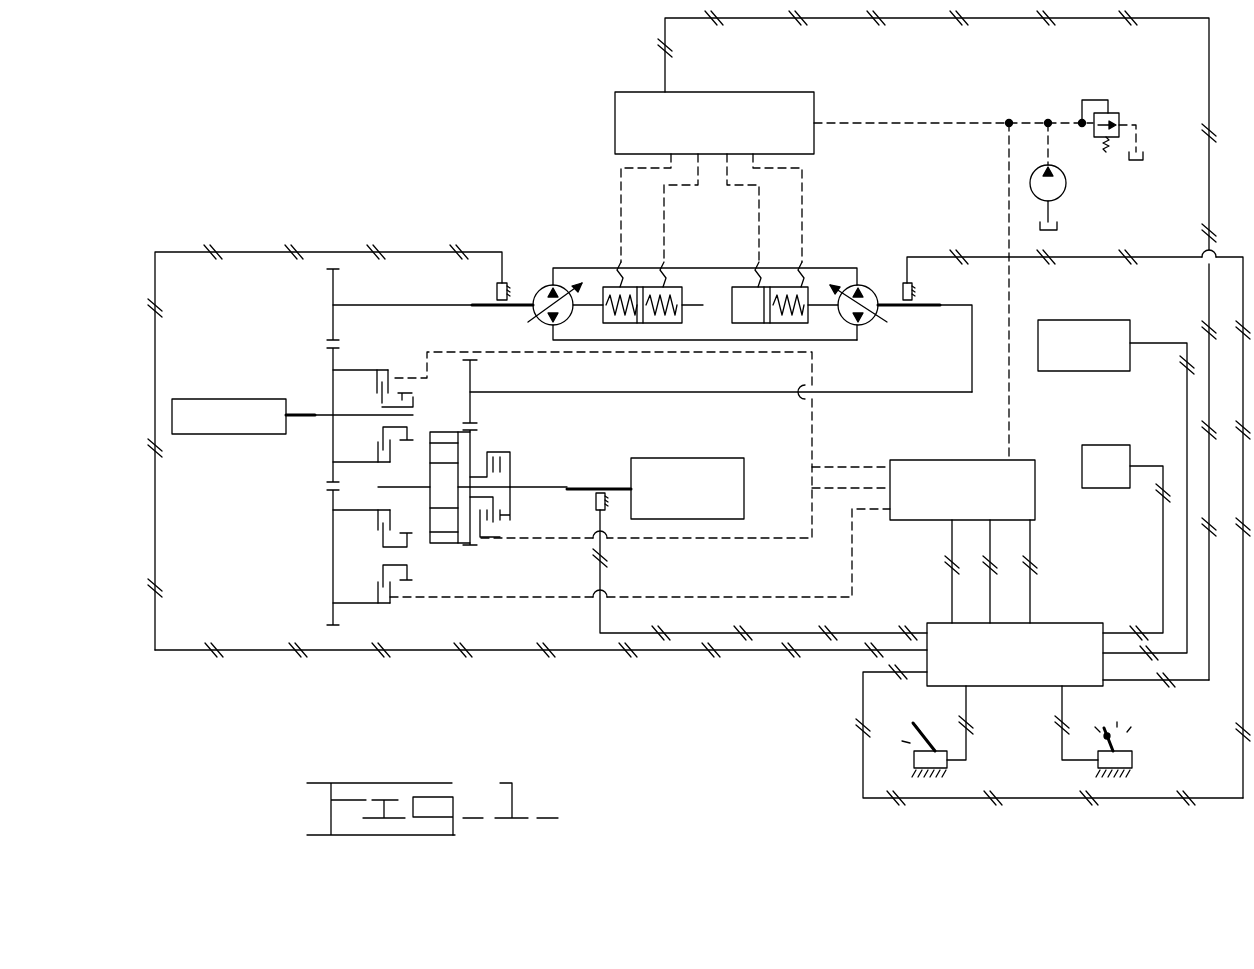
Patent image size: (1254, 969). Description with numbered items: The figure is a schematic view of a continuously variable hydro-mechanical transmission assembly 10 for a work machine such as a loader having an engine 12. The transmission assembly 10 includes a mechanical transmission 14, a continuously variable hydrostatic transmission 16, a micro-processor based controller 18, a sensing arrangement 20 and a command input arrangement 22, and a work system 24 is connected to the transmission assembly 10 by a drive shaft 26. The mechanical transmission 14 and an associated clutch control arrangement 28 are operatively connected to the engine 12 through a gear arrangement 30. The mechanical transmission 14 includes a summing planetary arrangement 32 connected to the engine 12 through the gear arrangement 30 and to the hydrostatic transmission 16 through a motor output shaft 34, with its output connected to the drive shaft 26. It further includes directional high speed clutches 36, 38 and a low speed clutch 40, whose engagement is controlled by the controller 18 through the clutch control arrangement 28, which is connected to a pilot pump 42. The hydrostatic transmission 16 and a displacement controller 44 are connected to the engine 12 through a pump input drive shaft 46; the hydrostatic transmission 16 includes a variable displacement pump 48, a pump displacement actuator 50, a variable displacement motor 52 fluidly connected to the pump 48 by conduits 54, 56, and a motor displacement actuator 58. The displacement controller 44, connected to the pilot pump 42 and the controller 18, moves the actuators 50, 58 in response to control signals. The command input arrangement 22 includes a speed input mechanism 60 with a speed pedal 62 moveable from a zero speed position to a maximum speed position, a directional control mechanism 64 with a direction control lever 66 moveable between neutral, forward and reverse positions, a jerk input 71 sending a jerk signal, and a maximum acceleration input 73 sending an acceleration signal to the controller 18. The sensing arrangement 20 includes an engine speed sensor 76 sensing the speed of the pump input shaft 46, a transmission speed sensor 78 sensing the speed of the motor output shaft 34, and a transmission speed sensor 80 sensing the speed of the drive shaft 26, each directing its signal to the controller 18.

The transmission assembly 10 is at (322, 158).
The engine 12 is at (245, 399).
The mechanical transmission 14 is at (297, 570).
The continuously variable transmission 16 is at (593, 170).
The micro-processor based controller 18 is at (1078, 623).
The sensing arrangement 20 is at (740, 680).
The command input arrangement 22 is at (915, 832).
The work system 24 is at (650, 458).
The drive shaft 26 is at (587, 485).
The clutch control arrangement 28 is at (918, 455).
The gear arrangement 30 is at (305, 477).
The summing planetary arrangement 32 is at (450, 430).
The motor output shaft 34 is at (660, 392).
The directional high speed clutch 36 is at (383, 372).
The directional high speed clutch 38 is at (383, 605).
The low speed clutch 40 is at (490, 455).
The pilot pump 42 is at (1066, 178).
The displacement controller 44 is at (624, 92).
The pump input drive shaft 46 is at (410, 305).
The variable displacement pump 48 is at (533, 285).
The pump displacement actuator 50 is at (605, 285).
The variable displacement motor 52 is at (880, 312).
The conduit 54 is at (688, 268).
The conduit 56 is at (838, 341).
The motor displacement actuator 58 is at (838, 283).
The speed input mechanism 60 is at (905, 768).
The speed pedal 62 is at (928, 745).
The directional control mechanism 64 is at (1137, 762).
The direction control lever 66 is at (1118, 745).
The jerk input 71 is at (1110, 445).
The maximum acceleration input 73 is at (1084, 371).
The engine speed sensor 76 is at (497, 290).
The transmission speed sensor 78 is at (912, 292).
The transmission speed sensor 80 is at (596, 500).